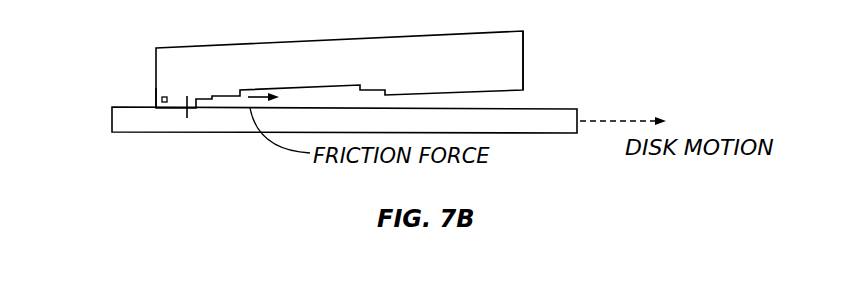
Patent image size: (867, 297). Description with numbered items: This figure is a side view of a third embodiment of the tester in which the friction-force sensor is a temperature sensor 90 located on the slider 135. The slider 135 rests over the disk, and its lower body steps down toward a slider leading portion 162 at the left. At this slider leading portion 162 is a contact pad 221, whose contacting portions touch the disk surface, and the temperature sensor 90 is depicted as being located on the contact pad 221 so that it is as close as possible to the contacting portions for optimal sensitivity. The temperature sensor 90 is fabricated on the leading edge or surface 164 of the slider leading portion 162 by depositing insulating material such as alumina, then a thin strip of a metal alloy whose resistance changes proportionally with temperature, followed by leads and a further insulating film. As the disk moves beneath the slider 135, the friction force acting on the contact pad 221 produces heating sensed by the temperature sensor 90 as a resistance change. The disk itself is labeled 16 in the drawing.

The slider leading portion 162 is at (157, 67).
The slider 135 is at (515, 70).
The leading edge or surface 164 is at (157, 97).
The temperature sensor 90 is at (163, 103).
The contact pad 221 is at (187, 118).
The disk 16 is at (557, 133).